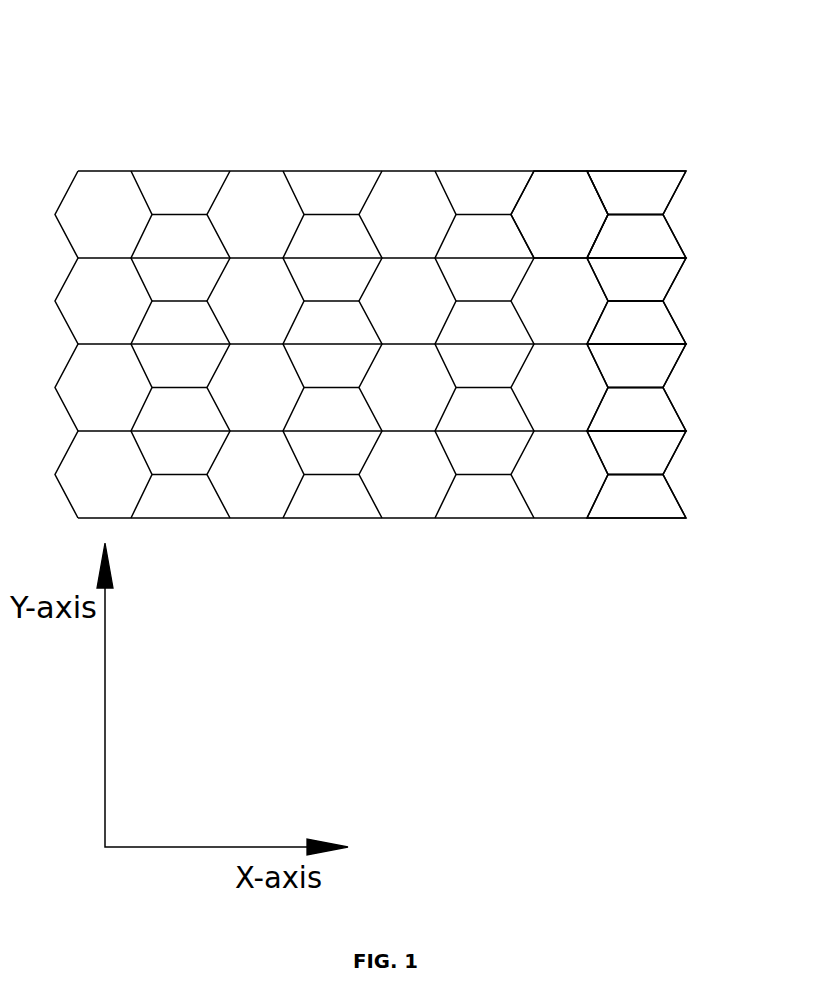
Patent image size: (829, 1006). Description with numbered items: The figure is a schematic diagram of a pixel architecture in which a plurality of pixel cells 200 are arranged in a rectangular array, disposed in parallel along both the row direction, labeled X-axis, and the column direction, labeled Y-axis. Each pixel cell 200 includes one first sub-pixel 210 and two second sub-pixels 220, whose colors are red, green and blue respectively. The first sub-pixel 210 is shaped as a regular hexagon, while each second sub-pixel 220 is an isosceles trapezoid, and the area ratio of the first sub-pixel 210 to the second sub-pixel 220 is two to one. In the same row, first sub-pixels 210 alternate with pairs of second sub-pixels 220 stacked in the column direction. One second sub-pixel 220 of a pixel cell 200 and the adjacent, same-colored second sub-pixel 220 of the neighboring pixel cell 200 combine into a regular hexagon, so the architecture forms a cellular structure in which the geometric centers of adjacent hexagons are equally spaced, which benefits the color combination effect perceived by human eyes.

The pixel cell 200 is at (745, 101).
The first sub-pixel 210 is at (553, 185).
The second sub-pixel 220 is at (674, 311).